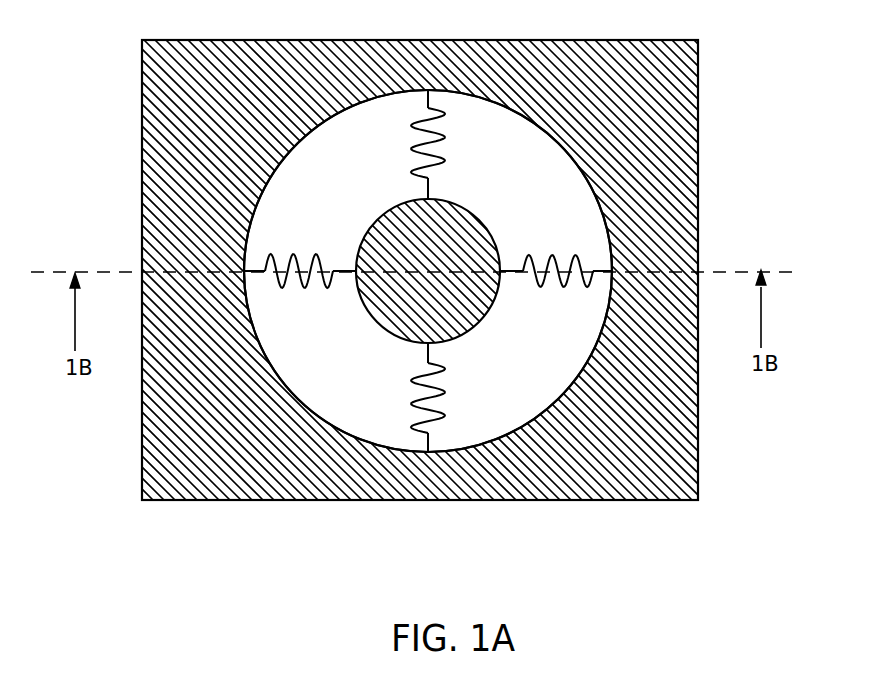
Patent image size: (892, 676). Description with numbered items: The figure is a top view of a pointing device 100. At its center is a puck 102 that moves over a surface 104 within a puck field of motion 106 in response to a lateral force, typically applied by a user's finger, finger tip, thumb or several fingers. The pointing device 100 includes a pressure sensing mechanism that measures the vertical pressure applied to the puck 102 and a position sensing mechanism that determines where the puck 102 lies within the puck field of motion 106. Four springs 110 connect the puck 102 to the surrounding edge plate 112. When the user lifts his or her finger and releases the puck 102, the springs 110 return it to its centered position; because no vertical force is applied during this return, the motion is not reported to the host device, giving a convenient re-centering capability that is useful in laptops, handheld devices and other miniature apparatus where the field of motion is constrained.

The pointing device 100 is at (647, 530).
The puck 102 is at (372, 203).
The surface 104 is at (533, 376).
The puck field of motion 106 is at (538, 148).
The springs 110 is at (568, 246).
The edge plate 112 is at (374, 437).